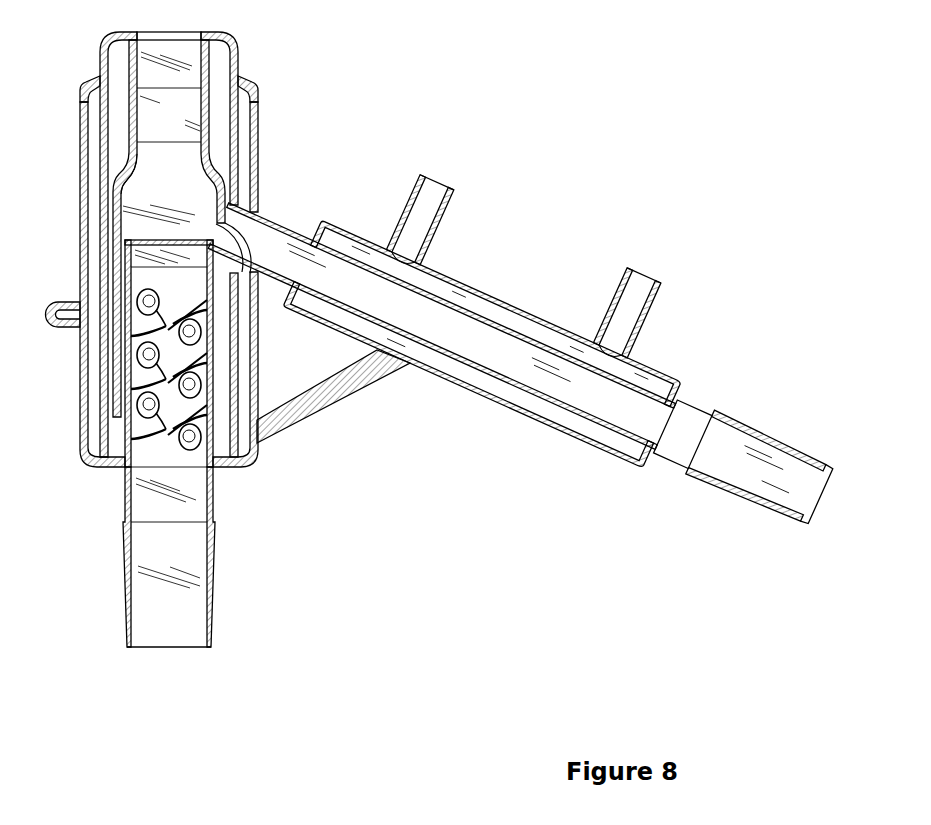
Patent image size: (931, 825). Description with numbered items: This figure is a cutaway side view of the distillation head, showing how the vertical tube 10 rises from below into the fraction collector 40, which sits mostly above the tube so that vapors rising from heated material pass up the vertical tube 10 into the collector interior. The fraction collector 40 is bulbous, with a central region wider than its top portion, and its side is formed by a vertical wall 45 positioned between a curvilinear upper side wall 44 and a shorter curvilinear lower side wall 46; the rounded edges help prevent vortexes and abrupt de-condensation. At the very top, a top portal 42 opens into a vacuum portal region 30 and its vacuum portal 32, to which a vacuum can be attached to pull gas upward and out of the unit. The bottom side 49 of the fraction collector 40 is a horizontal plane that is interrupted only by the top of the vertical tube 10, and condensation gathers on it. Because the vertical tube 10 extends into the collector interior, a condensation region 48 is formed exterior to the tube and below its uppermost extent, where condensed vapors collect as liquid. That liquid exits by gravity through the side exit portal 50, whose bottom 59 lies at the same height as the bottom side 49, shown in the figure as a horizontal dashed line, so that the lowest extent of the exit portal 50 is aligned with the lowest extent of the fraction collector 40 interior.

The vertical tube 10 is at (128, 288).
The vacuum portal region 30 is at (182, 102).
The vacuum portal 32 is at (183, 33).
The fraction collector 40 is at (148, 207).
The top portal 42 is at (177, 142).
The curvilinear upper side wall 44 is at (130, 172).
The vertical wall 45 is at (115, 203).
The curvilinear lower side wall 46 is at (120, 265).
The condensation region 48 is at (215, 258).
The bottom side 49 is at (145, 268).
The side exit portal 50 is at (237, 235).
The bottom of the exit portal 59 is at (238, 268).